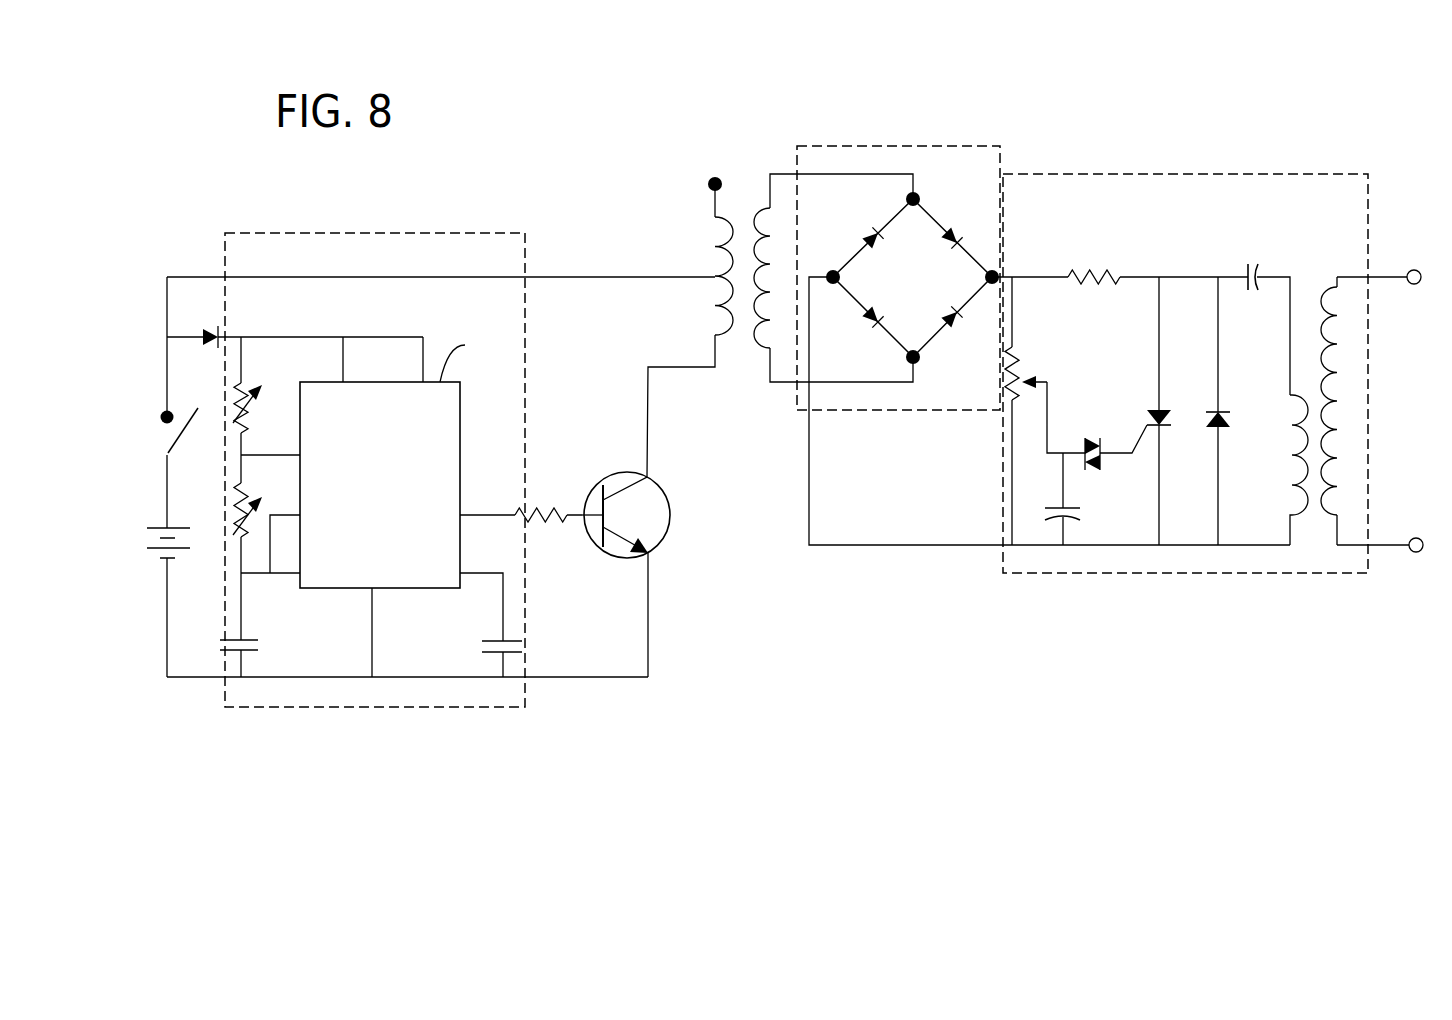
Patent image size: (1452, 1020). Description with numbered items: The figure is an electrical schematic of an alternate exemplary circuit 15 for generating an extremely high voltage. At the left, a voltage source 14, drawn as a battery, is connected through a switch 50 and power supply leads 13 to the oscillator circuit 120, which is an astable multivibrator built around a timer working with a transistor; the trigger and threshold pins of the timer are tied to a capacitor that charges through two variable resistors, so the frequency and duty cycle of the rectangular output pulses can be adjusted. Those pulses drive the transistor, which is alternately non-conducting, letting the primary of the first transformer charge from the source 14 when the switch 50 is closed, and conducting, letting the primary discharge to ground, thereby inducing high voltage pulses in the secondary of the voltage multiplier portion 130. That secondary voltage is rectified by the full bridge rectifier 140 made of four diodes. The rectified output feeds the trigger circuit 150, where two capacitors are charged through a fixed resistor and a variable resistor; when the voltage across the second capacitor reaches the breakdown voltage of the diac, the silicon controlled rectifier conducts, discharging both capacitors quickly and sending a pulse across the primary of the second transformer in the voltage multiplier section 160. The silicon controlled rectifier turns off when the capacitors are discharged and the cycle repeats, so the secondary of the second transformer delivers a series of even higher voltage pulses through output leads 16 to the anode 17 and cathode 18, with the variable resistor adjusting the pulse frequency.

The power supply leads 13 is at (219, 275).
The voltage source 14 is at (161, 552).
The circuit 15 is at (686, 74).
The output leads 16 is at (1397, 275).
The anode 17 is at (1420, 270).
The cathode 18 is at (1417, 552).
The switch 50 is at (165, 430).
The oscillator circuit 120 is at (394, 233).
The voltage multiplier portion 130 is at (741, 178).
The full bridge rectifier 140 is at (905, 145).
The trigger circuit 150 is at (1183, 573).
The voltage multiplier section 160 is at (1222, 174).